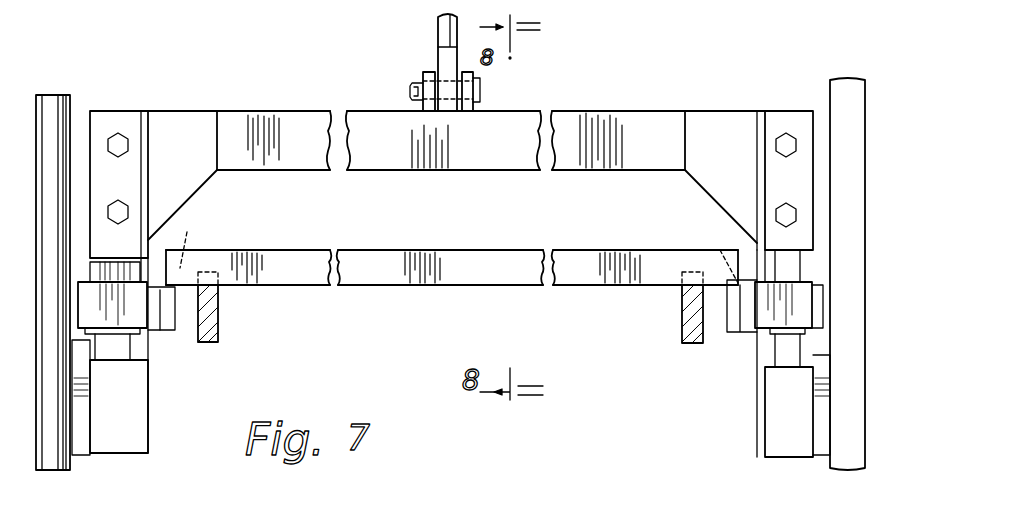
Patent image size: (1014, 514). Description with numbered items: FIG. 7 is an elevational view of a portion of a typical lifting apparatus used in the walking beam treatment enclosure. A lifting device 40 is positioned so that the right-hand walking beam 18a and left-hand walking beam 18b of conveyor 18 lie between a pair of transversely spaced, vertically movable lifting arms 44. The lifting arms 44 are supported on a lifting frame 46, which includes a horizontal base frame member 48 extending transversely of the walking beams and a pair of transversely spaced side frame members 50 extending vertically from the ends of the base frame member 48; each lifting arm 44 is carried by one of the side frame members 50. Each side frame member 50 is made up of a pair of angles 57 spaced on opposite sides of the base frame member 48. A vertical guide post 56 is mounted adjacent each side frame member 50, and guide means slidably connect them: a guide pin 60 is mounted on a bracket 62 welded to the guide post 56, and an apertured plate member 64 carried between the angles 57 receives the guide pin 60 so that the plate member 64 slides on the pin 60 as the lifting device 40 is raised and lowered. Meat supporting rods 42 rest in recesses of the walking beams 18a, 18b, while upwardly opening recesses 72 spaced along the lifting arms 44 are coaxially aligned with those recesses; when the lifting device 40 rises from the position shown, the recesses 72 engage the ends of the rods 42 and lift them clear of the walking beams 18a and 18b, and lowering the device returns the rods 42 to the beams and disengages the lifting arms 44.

The walking beam conveyor 18 is at (404, 310).
The right-hand walking beam 18a is at (688, 320).
The left-hand walking beam 18b is at (212, 325).
The lifting device 40 is at (630, 108).
The transverse rod 42 is at (490, 258).
The lifting arm 44 is at (155, 325).
The lifting frame 46 is at (312, 112).
The horizontal base frame member 48 is at (500, 135).
The side frame member 50 is at (120, 437).
The vertical guide post 56 is at (68, 100).
The angle 57 is at (112, 122).
The guide pin 60 is at (105, 355).
The bracket 62 is at (78, 425).
The apertured plate member 64 is at (100, 295).
The upwardly opening recess 72 is at (459, 249).